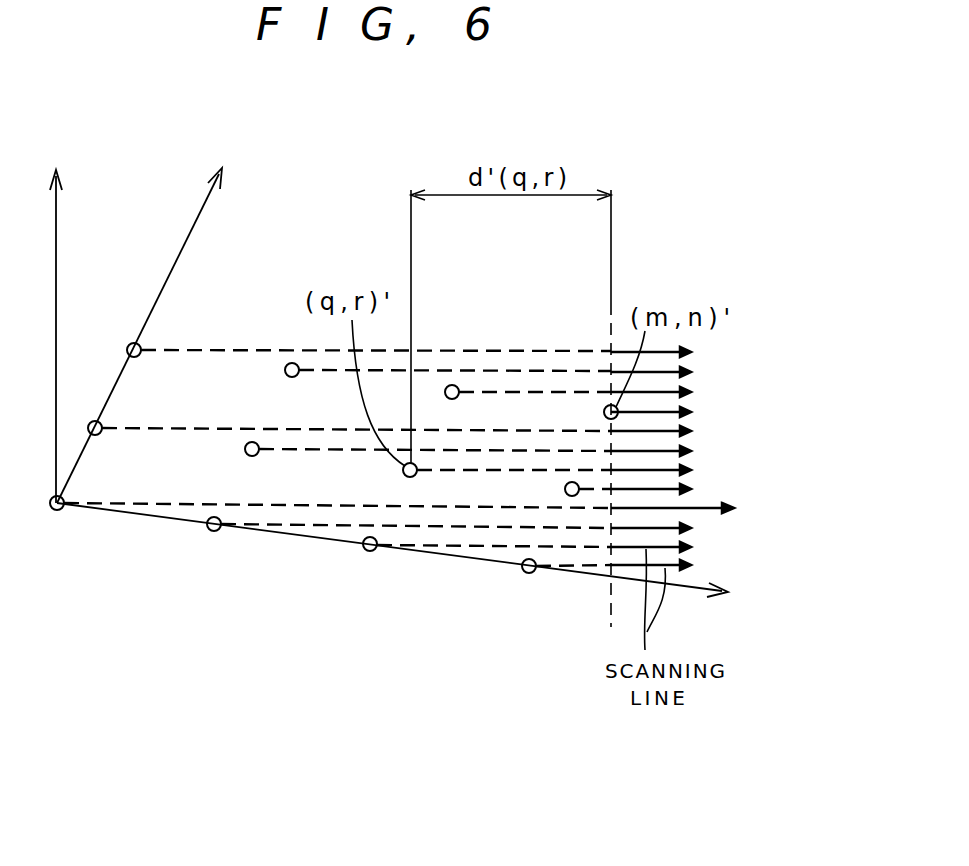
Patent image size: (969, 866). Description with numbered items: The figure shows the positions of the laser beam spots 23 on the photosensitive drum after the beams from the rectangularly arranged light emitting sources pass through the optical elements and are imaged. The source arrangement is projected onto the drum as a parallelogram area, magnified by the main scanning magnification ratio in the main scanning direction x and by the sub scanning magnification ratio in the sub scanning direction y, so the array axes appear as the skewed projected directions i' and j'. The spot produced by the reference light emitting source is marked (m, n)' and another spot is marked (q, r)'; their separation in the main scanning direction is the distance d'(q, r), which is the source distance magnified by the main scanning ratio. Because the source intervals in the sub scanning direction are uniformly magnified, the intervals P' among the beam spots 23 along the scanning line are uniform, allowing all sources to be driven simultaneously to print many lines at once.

The beam spots 23 is at (364, 550).
The main scanning direction x is at (683, 509).
The sub scanning direction y is at (45, 336).
The projected i direction i' is at (404, 562).
The projected j direction j' is at (150, 334).
The intervals of beam spots P' is at (730, 457).